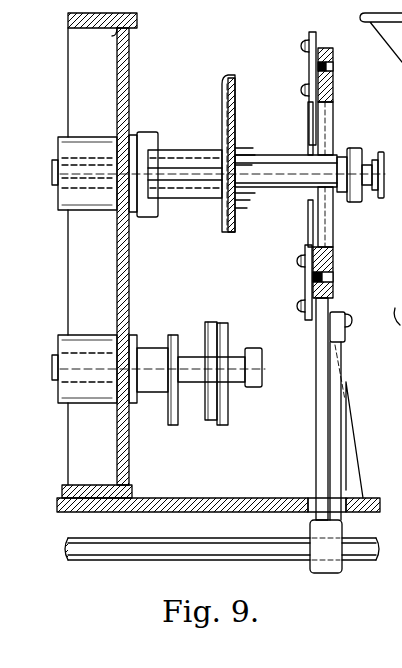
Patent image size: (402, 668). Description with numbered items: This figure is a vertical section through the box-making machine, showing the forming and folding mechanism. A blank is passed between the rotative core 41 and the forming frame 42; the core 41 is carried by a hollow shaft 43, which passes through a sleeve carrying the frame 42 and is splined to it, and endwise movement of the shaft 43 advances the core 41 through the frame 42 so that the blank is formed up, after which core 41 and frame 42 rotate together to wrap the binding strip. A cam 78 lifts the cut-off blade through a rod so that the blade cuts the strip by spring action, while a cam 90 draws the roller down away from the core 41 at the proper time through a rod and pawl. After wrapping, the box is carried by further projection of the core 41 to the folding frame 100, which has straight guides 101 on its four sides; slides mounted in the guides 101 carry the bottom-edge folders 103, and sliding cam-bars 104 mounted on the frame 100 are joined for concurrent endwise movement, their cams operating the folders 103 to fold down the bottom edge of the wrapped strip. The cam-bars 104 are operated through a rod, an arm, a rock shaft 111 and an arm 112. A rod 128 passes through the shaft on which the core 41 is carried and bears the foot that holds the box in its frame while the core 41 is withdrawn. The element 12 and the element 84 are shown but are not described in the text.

The shaft end disc 12 is at (382, 162).
The rotative core 41 is at (355, 150).
The forming frame 42 is at (235, 110).
The hollow shaft 43 is at (268, 183).
The cam 78 is at (221, 326).
The clamp link 84 is at (356, 432).
The cam 90 is at (170, 405).
The folding frame 100 is at (330, 48).
The straight guides 101 is at (309, 72).
The bottom-edge folders 103 is at (305, 174).
The sliding cam-bars 104 is at (330, 82).
The rock shaft 111 is at (250, 560).
The arm 112 is at (333, 415).
The rod 128 is at (366, 187).